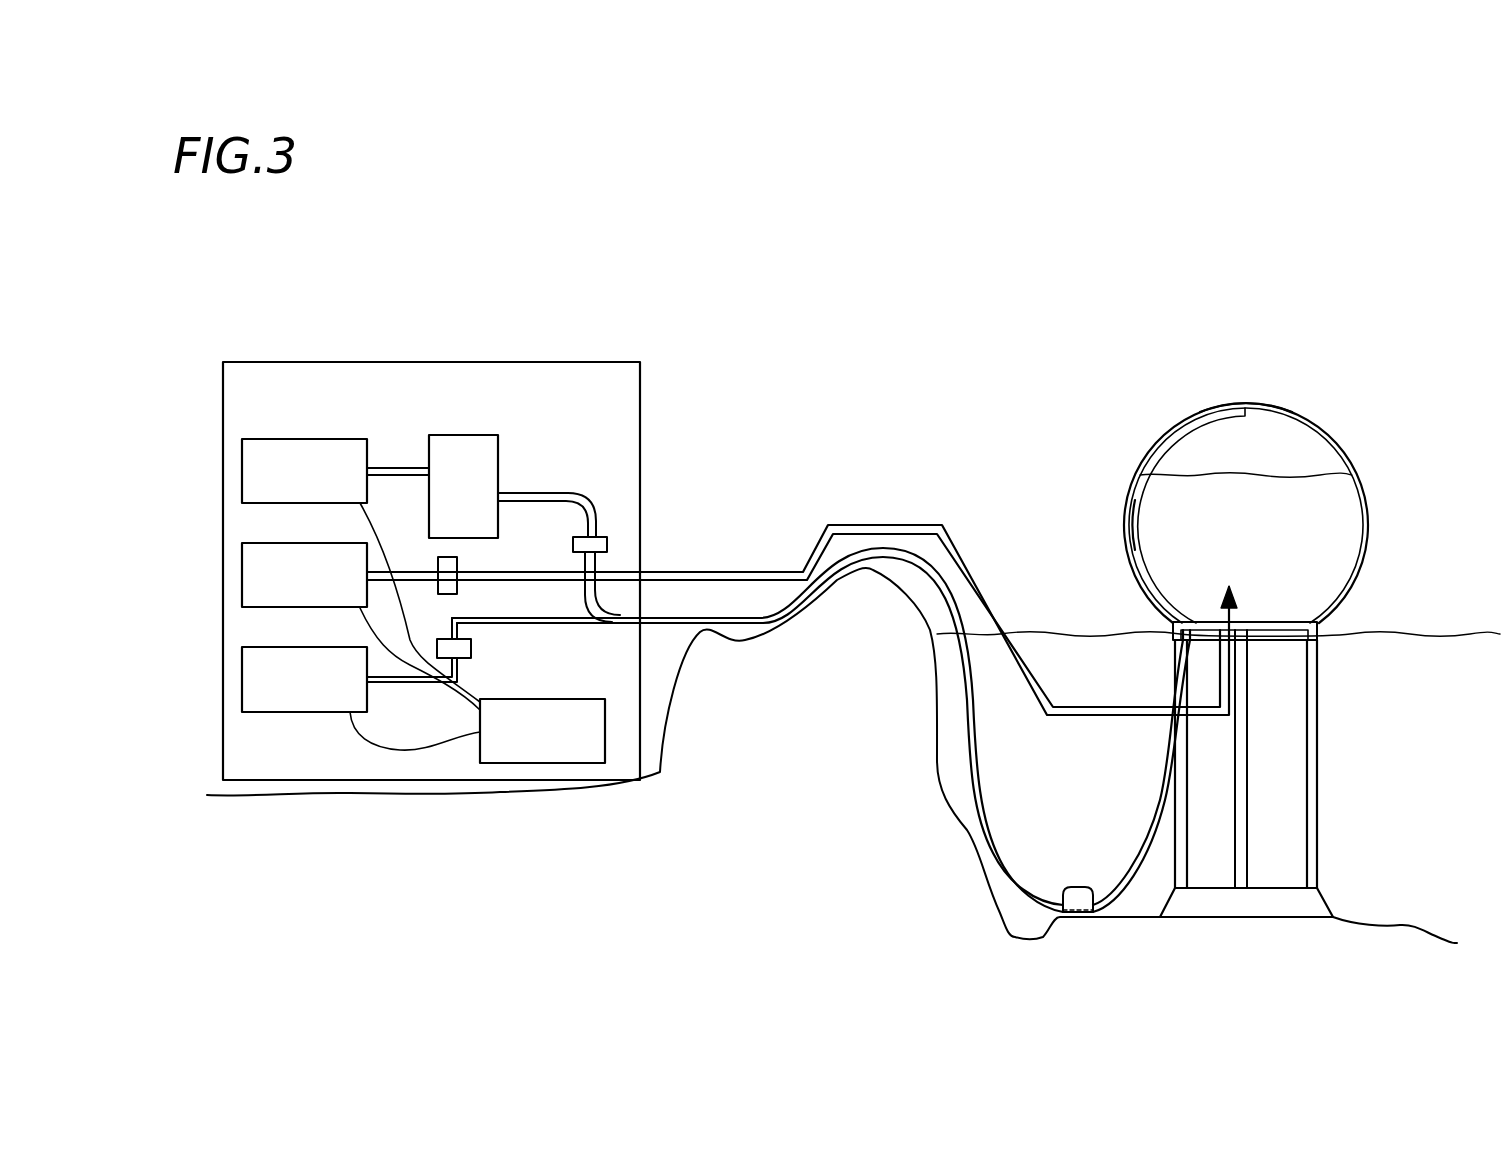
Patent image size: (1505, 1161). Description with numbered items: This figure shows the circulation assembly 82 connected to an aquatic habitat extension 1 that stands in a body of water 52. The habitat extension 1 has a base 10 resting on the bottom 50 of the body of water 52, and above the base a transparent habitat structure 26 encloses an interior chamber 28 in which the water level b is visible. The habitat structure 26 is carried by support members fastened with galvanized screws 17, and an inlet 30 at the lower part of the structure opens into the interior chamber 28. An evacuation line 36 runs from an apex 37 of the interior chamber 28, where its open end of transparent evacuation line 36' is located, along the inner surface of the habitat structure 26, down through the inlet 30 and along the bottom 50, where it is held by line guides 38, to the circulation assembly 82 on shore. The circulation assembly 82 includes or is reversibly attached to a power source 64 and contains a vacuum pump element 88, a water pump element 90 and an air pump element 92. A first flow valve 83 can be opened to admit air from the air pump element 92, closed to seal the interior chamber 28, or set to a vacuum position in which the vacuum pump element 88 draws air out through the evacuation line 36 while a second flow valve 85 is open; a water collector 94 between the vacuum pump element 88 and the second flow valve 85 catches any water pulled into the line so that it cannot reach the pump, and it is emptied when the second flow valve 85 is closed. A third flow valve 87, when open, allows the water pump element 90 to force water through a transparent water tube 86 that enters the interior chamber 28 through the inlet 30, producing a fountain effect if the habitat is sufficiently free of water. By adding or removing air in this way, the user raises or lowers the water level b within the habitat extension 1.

The aquatic habitat extension 1 is at (1388, 393).
The base 10 is at (1322, 893).
The galvanized screws 17 is at (1235, 677).
The transparent habitat structure 26 is at (1367, 546).
The interior chamber 28 is at (1146, 522).
The inlet 30 is at (1278, 592).
The evacuation line 36 is at (698, 743).
The open end of transparent evacuation line 36' is at (1197, 515).
The apex 37 is at (1245, 403).
The line guides 38 is at (1079, 887).
The bottom of body of water 50 is at (1398, 933).
The body of water 52 is at (1421, 638).
The power source 64 is at (573, 763).
The circulation assembly 82 is at (280, 368).
The first flow valve 83 is at (471, 645).
The second flow valve 85 is at (598, 537).
The transparent water tube 86 is at (755, 571).
The third flow valve 87 is at (446, 557).
The vacuum pump element 88 is at (242, 458).
The water pump element 90 is at (242, 573).
The air pump element 92 is at (242, 688).
The water collector 94 is at (498, 462).
The water level b is at (1271, 476).